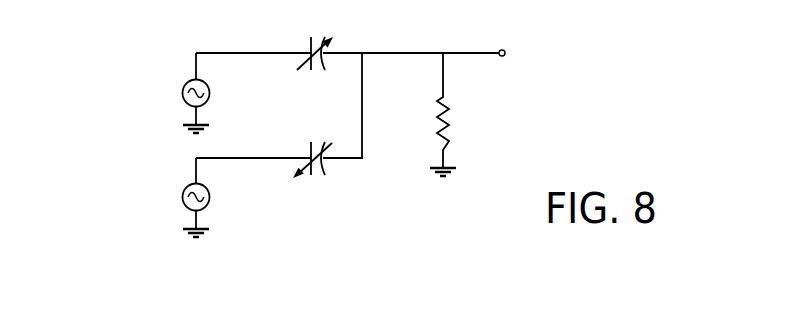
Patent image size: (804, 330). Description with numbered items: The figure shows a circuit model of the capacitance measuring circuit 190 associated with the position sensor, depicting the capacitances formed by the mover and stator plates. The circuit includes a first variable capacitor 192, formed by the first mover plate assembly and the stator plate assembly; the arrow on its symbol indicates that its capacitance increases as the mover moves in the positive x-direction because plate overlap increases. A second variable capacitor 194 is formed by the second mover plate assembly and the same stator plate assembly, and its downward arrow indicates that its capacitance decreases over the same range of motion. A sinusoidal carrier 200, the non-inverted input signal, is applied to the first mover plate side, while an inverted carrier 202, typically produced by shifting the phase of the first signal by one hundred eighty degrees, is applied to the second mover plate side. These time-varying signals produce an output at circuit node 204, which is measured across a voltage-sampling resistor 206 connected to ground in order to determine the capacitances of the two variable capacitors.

The capacitance measuring circuit 190 is at (431, 201).
The first variable capacitor 192 is at (315, 37).
The second variable capacitor 194 is at (313, 175).
The sinusoidal carrier 200 is at (188, 80).
The inverted carrier 202 is at (188, 184).
The circuit node 204 is at (505, 48).
The voltage-sampling resistor 206 is at (450, 107).